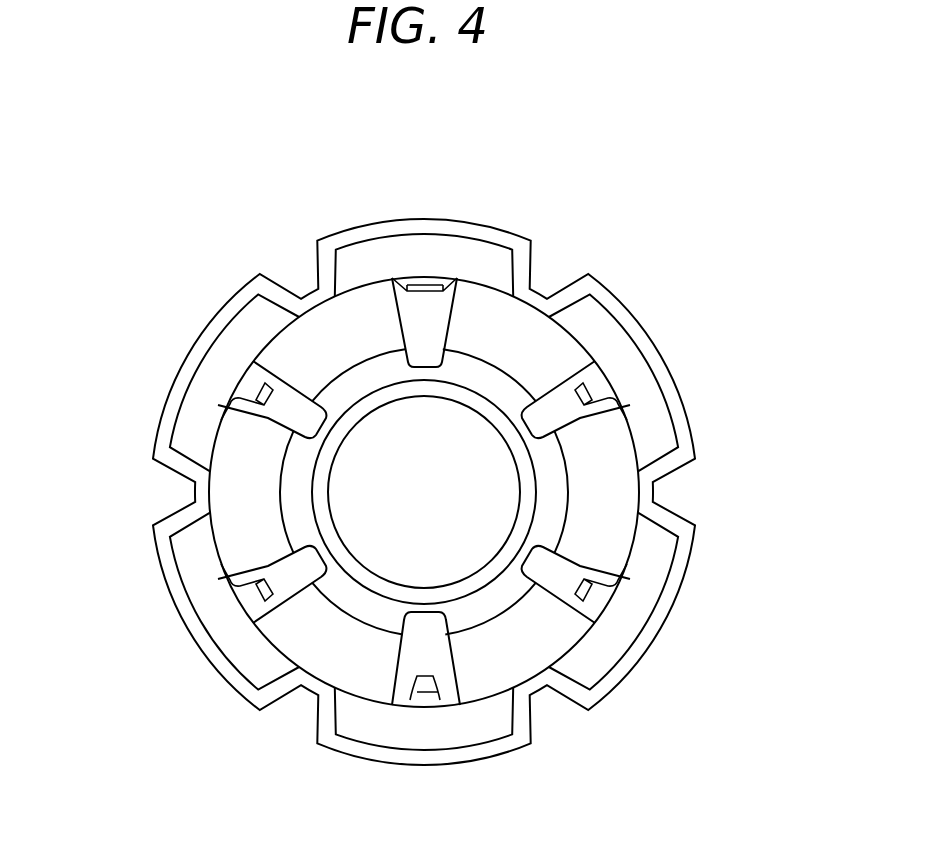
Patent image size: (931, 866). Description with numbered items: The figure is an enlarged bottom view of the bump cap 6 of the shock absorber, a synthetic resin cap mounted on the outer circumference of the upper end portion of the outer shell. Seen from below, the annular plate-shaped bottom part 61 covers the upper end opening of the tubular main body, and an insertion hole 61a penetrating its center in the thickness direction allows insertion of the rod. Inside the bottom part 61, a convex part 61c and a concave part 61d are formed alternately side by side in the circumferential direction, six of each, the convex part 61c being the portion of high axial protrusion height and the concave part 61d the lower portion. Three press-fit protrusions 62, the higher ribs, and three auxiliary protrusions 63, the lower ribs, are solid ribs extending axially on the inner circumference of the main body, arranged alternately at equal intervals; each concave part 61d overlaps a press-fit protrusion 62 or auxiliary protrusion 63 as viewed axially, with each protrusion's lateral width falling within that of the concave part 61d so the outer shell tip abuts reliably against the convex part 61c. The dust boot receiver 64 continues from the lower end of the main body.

The bump cap 6 is at (232, 268).
The bottom part 61 is at (567, 337).
The insertion hole 61a is at (372, 571).
The convex part 61c is at (357, 303).
The concave part 61d is at (408, 313).
The press-fit protrusion 62 is at (266, 399).
The auxiliary protrusion 63 is at (430, 293).
The dust boot receiver 64 is at (480, 222).